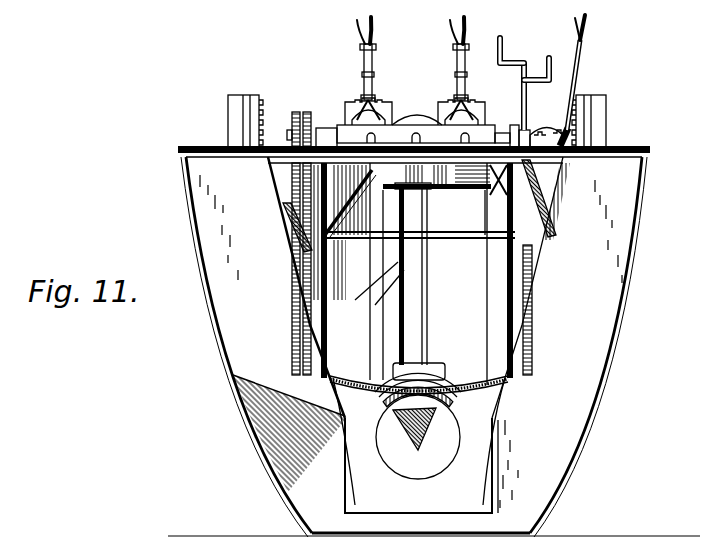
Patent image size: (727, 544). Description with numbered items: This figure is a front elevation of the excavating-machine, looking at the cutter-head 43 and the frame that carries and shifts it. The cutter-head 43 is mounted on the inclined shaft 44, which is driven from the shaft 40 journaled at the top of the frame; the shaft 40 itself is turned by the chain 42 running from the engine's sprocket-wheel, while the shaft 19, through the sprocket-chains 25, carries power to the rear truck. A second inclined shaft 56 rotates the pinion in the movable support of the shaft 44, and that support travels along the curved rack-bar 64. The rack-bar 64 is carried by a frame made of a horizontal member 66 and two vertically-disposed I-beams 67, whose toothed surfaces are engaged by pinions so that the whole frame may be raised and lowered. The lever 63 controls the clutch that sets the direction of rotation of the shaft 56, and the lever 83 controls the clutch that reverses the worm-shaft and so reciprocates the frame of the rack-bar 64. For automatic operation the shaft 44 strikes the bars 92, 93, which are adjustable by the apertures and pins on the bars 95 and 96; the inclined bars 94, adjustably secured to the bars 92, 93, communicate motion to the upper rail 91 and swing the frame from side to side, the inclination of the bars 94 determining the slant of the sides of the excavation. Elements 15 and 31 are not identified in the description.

The stem 15 is at (528, 86).
The shaft 19 is at (510, 64).
The sprocket-chains 25 is at (305, 300).
The diagonal braces 31 is at (306, 256).
The shaft 40 is at (507, 130).
The chain 42 is at (297, 112).
The cutter-head 43 is at (410, 472).
The shaft 44 is at (415, 350).
The shaft 56 is at (398, 338).
The lever 63 is at (364, 62).
The rack-bar 64 is at (247, 100).
The horizontal member 66 is at (578, 96).
The I-beams 67 is at (228, 124).
The lever 83 is at (457, 62).
The upper rail 91 is at (400, 270).
The bar 92 is at (425, 195).
The bar 93 is at (480, 240).
The bars 94 is at (478, 205).
The bar 95 is at (393, 272).
The bar 96 is at (485, 238).